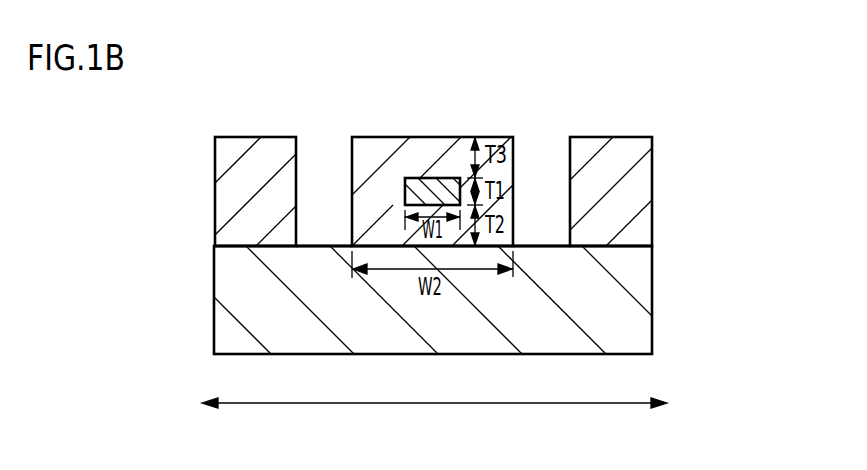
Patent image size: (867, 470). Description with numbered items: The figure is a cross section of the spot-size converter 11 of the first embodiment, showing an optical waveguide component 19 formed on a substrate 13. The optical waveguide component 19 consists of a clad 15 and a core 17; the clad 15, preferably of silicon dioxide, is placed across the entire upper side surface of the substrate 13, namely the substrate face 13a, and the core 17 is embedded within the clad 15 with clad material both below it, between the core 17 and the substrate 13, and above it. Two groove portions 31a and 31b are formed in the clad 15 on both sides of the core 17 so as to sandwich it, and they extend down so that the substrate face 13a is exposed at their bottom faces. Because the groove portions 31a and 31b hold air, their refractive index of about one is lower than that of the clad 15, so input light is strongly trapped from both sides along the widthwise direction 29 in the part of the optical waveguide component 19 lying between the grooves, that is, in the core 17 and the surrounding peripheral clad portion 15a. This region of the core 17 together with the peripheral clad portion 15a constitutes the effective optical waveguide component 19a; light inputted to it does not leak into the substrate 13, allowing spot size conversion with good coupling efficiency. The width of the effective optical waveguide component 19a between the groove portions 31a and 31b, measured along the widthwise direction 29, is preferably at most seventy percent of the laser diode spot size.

The spot-size converter 11 is at (640, 111).
The substrate 13 is at (230, 290).
The substrate face 13a is at (530, 238).
The clad 15 is at (233, 231).
The peripheral clad portion 15a is at (370, 164).
The core 17 is at (405, 196).
The optical waveguide component 19 is at (90, 155).
The effective optical waveguide component 19a is at (145, 140).
The widthwise direction 29 is at (263, 404).
The groove portion 31a is at (324, 140).
The groove portion 31b is at (542, 136).